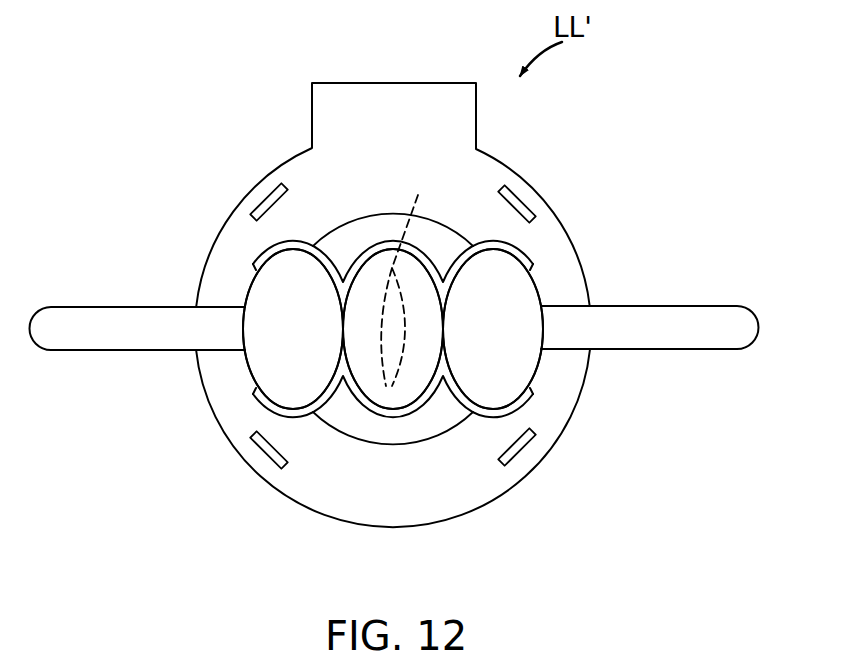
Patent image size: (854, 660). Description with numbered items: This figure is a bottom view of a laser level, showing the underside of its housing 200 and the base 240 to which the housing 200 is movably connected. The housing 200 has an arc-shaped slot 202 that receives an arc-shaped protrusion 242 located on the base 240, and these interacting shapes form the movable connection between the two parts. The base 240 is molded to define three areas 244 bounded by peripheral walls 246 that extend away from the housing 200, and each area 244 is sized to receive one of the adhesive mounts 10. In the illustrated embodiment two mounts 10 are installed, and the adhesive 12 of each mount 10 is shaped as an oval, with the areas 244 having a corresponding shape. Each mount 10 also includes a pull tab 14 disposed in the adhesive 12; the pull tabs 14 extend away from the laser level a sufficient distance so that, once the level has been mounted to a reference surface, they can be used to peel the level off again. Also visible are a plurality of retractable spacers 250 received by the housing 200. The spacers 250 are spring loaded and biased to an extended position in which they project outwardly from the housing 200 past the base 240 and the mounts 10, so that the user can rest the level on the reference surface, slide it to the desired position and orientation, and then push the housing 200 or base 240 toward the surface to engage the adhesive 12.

The mount 10 is at (308, 341).
The pressure sensitive thermoplastic adhesive 12 is at (258, 290).
The pull tab 14 is at (78, 338).
The housing 200 is at (212, 293).
The arc-shaped slot 202 is at (420, 217).
The base 240 is at (427, 425).
The arc-shaped protrusion 242 is at (392, 386).
The areas 244 is at (245, 368).
The peripheral walls 246 is at (380, 247).
The retractable spacers 250 is at (268, 194).